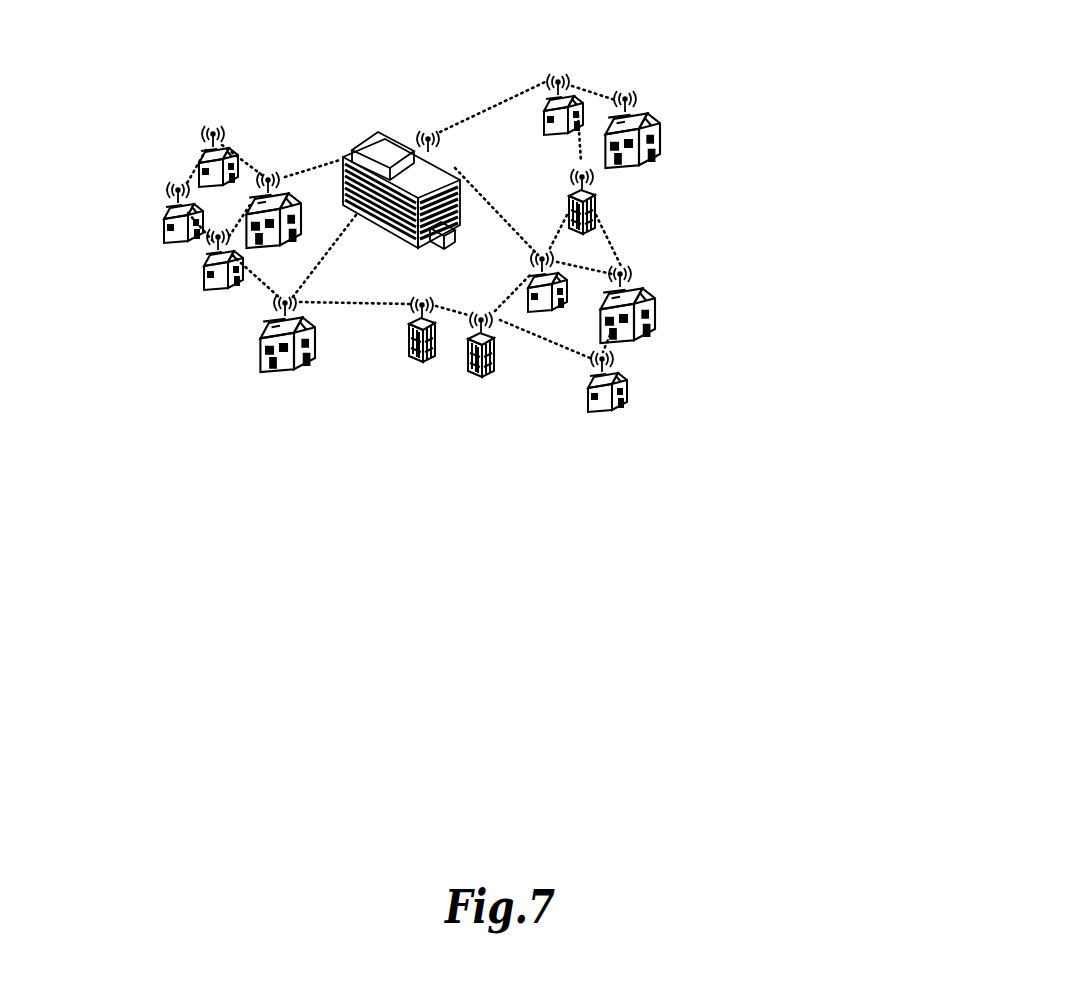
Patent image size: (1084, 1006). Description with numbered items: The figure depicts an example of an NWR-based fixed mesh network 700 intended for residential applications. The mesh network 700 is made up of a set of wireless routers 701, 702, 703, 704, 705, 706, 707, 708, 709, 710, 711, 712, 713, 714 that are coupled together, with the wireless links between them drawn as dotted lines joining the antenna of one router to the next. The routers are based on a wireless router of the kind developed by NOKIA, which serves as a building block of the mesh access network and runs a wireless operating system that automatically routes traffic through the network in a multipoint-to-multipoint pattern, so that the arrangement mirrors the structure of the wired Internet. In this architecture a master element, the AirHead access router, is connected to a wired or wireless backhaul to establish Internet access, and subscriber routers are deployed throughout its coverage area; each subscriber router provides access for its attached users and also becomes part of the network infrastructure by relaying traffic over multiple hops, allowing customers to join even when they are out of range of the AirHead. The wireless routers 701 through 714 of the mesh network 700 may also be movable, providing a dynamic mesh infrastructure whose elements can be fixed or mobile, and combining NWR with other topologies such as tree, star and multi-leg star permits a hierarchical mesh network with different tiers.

The NWR-based fixed mesh network 700 is at (929, 53).
The wireless router 701 is at (411, 122).
The wireless router 702 is at (236, 123).
The wireless router 703 is at (155, 250).
The wireless router 704 is at (205, 305).
The wireless router 705 is at (284, 252).
The wireless router 706 is at (315, 362).
The wireless router 707 is at (418, 373).
The wireless router 708 is at (478, 392).
The wireless router 709 is at (594, 415).
The wireless router 710 is at (665, 320).
The wireless router 711 is at (524, 290).
The wireless router 712 is at (610, 196).
The wireless router 713 is at (580, 97).
The wireless router 714 is at (663, 134).